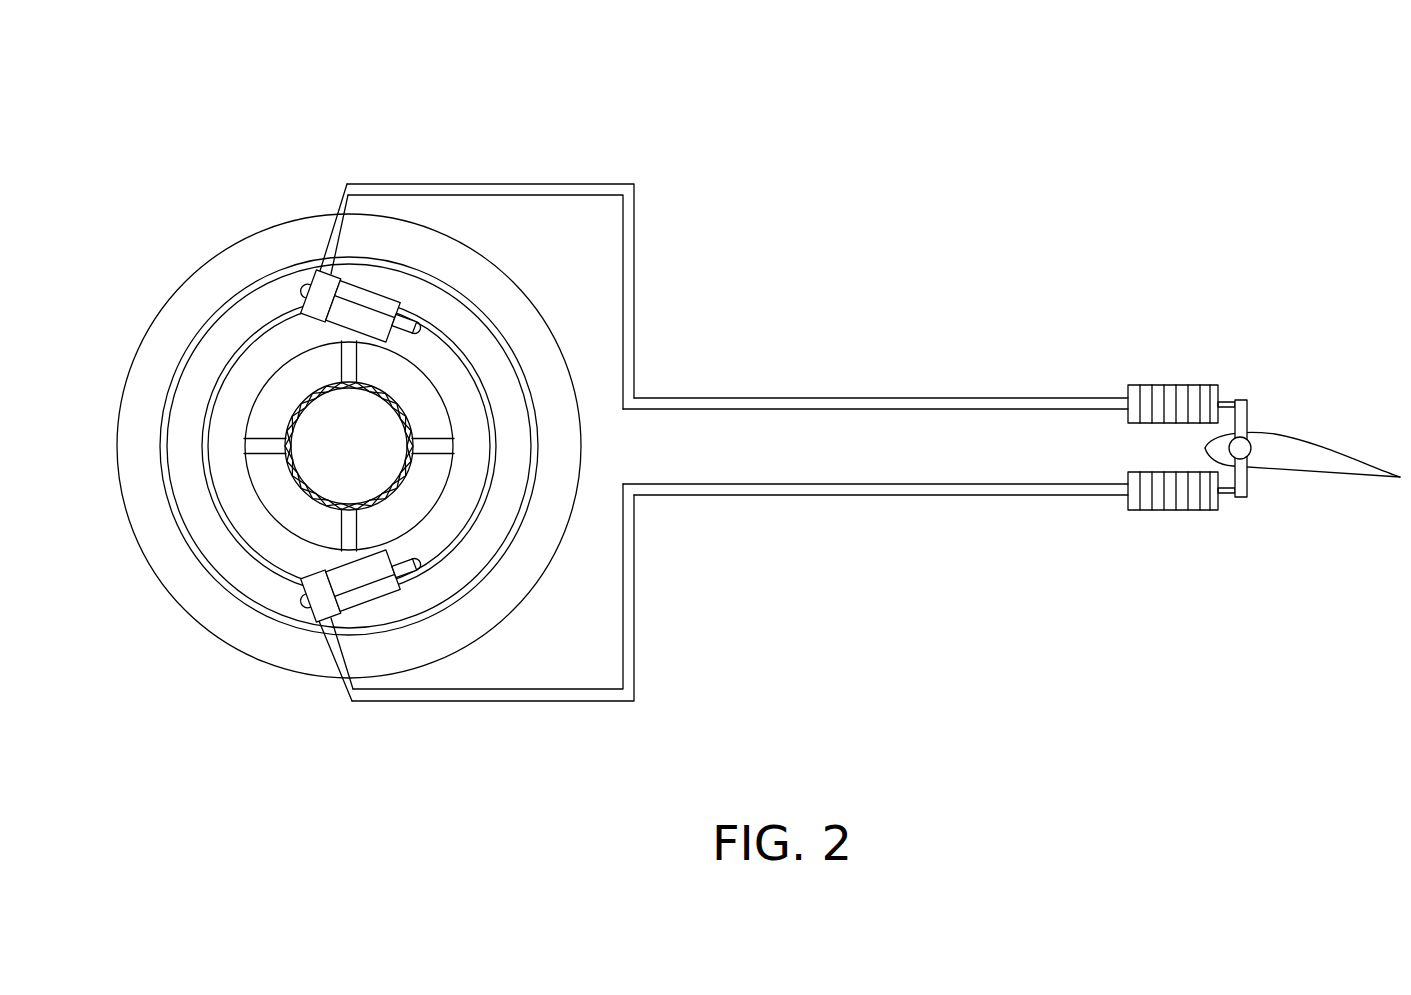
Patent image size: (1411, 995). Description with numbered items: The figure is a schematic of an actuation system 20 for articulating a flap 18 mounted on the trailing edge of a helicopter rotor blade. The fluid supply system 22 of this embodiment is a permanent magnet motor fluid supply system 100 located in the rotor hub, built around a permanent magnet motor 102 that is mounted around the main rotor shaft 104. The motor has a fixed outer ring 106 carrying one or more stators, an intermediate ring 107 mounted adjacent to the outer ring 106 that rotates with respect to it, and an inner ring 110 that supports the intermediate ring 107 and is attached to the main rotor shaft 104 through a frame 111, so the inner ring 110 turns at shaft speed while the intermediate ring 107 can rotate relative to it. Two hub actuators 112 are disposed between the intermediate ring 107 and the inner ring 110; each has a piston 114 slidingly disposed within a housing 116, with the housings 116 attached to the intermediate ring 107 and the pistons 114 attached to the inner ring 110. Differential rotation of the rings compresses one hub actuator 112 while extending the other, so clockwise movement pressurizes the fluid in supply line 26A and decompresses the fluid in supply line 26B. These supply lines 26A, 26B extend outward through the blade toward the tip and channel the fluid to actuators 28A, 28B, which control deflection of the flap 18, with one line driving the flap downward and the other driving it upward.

The flap 18 is at (1307, 457).
The actuation system 20 is at (920, 283).
The fluid supply system 22 is at (540, 170).
The fluid supply line 26A is at (862, 404).
The fluid supply line 26B is at (862, 490).
The actuator 28A is at (1158, 407).
The actuator 28B is at (1167, 495).
The permanent magnet motor fluid supply system 100 is at (197, 693).
The permanent magnet motor 102 is at (140, 602).
The main rotor shaft 104 is at (307, 484).
The outer ring 106 is at (235, 262).
The intermediate ring 107 is at (198, 372).
The inner ring 110 is at (461, 388).
The frame 111 is at (263, 440).
The hub actuator 112 is at (362, 293).
The piston 114 is at (300, 316).
The housing 116 is at (384, 302).